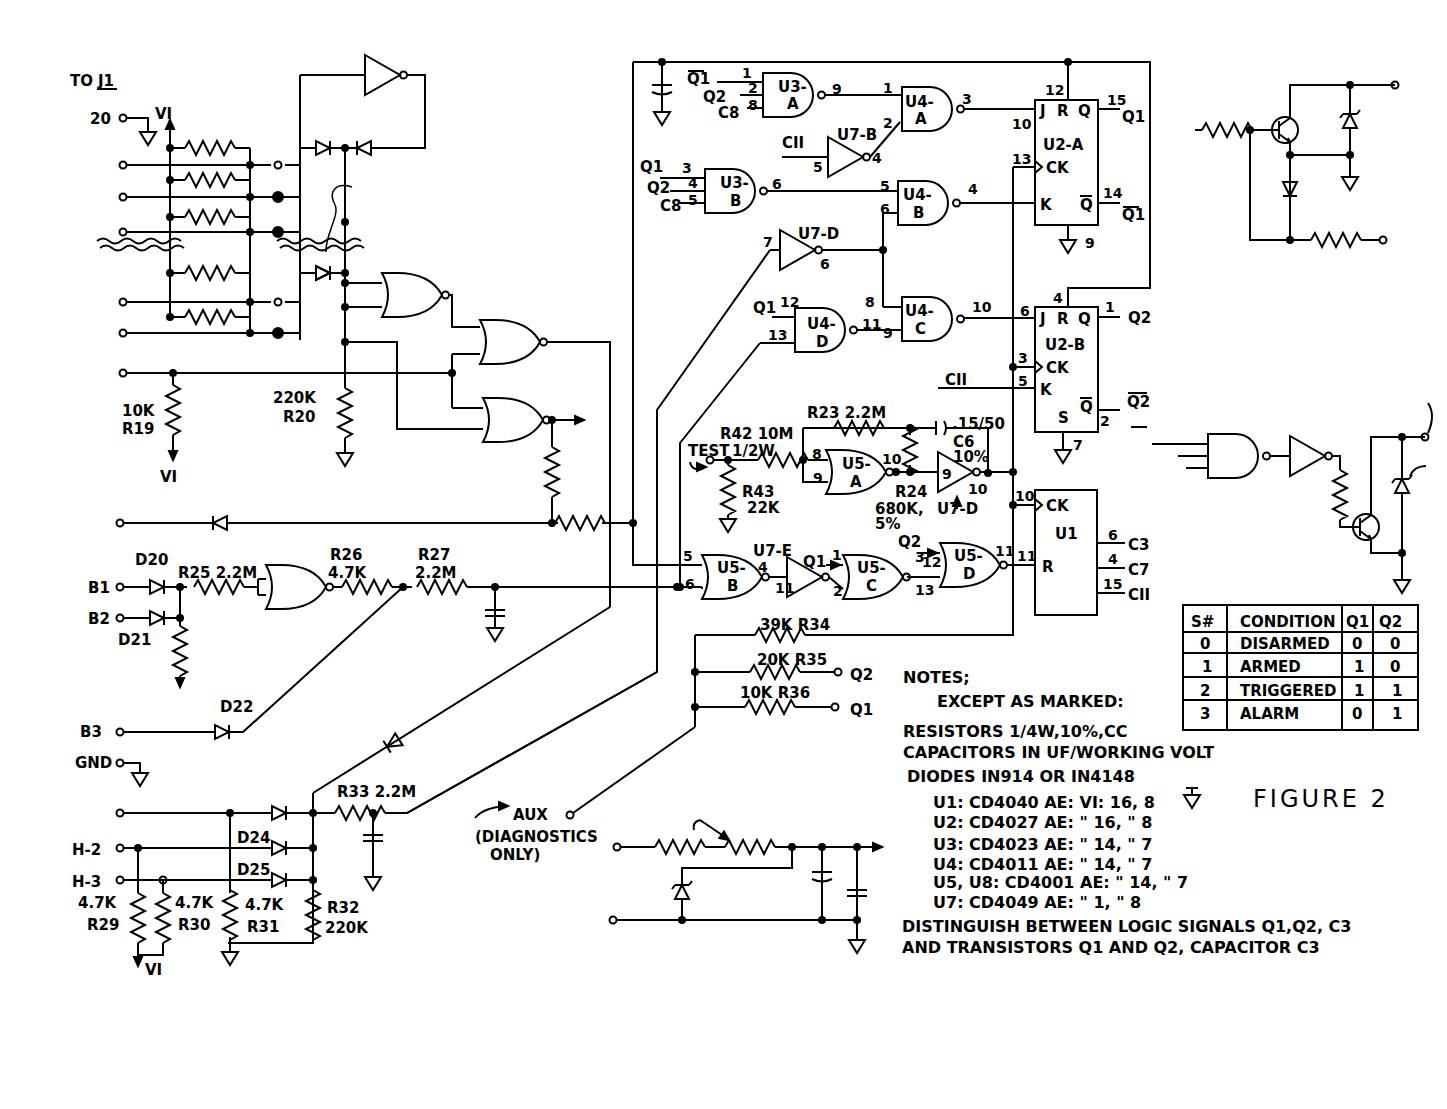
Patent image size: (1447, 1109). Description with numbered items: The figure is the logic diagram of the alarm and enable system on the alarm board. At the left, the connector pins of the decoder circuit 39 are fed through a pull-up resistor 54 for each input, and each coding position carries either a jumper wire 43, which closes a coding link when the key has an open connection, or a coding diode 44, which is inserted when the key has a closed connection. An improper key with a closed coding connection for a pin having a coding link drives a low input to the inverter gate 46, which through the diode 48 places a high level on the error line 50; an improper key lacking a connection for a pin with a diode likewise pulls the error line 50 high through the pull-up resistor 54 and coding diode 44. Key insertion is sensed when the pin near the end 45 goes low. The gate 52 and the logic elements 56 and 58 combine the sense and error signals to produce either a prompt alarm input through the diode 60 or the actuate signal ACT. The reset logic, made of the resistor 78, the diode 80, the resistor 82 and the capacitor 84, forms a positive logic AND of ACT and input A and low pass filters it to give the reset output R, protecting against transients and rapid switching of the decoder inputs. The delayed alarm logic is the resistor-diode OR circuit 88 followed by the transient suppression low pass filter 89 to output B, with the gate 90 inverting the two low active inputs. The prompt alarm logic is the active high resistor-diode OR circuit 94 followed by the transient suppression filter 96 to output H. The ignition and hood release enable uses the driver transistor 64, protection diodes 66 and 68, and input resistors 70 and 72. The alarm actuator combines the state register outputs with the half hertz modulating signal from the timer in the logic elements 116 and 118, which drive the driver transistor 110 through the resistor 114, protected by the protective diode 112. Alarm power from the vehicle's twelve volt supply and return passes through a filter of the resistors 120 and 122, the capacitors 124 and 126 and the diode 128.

The decoder circuit 39 is at (201, 328).
The jumper wire 43 is at (278, 333).
The coding diode 44 is at (433, 178).
The pin near the end 45 is at (124, 373).
The inverter gate 46 is at (370, 91).
The diode 48 is at (370, 143).
The error line 50 is at (348, 258).
The gate 52 is at (411, 270).
The pull-up resistor 54 is at (134, 56).
The logic element 56 is at (507, 314).
The logic element 58 is at (494, 397).
The diode 60 is at (410, 741).
The driver transistor 64 is at (1298, 122).
The protection diode 66 is at (1378, 118).
The protection diode 68 is at (1281, 188).
The input resistor 70 is at (1206, 138).
The input resistor 72 is at (1342, 233).
The resistor 78 is at (542, 480).
The diode 80 is at (218, 508).
The resistor 82 is at (588, 520).
The capacitor 84 is at (672, 98).
The resistor-diode OR circuit 88 is at (252, 646).
The transient suppression low pass filter 89 is at (454, 633).
The gate 90 is at (296, 608).
The resistor-diode OR circuit 94 is at (203, 795).
The transient suppression filter 96 is at (398, 861).
The driver transistor 110 is at (1370, 552).
The protective diode 112 is at (1405, 497).
The resistor 114 is at (1338, 499).
The logic element 116 is at (1245, 412).
The logic element 118 is at (1324, 440).
The resistor 120 is at (676, 836).
The resistor 122 is at (765, 835).
The capacitor 124 is at (840, 870).
The capacitor 126 is at (876, 886).
The diode 128 is at (688, 894).